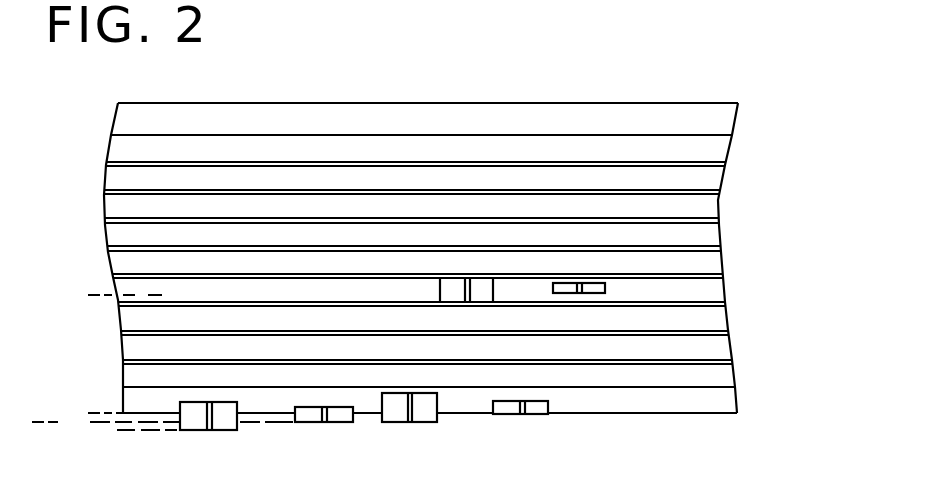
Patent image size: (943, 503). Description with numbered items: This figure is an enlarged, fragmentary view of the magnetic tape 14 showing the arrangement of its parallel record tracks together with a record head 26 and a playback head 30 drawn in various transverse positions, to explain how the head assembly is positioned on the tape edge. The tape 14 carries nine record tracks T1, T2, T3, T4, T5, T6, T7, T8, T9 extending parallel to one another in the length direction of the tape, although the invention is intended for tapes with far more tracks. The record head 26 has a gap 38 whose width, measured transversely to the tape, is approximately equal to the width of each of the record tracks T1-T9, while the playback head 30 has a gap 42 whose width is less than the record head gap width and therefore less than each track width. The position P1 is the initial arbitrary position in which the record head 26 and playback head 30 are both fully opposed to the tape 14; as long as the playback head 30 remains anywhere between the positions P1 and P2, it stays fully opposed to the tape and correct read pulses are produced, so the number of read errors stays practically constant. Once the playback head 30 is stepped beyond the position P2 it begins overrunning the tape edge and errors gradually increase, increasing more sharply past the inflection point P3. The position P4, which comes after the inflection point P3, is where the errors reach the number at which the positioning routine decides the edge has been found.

The magnetic tape 14 is at (653, 103).
The record track T1 is at (725, 148).
The record track T2 is at (718, 182).
The record track T3 is at (716, 212).
The record track T4 is at (716, 237).
The record track T5 is at (716, 265).
The record track T6 is at (718, 293).
The record track T7 is at (722, 318).
The record track T8 is at (720, 350).
The record track T9 is at (723, 375).
The initial head position P1 is at (108, 296).
The head position at tape edge P2 is at (91, 414).
The inflection point position P3 is at (147, 429).
The error-threshold head position P4 is at (136, 446).
The record head 26 is at (216, 430).
The playback head 30 is at (337, 423).
The record head gap 38 is at (458, 293).
The playback head gap 42 is at (575, 293).